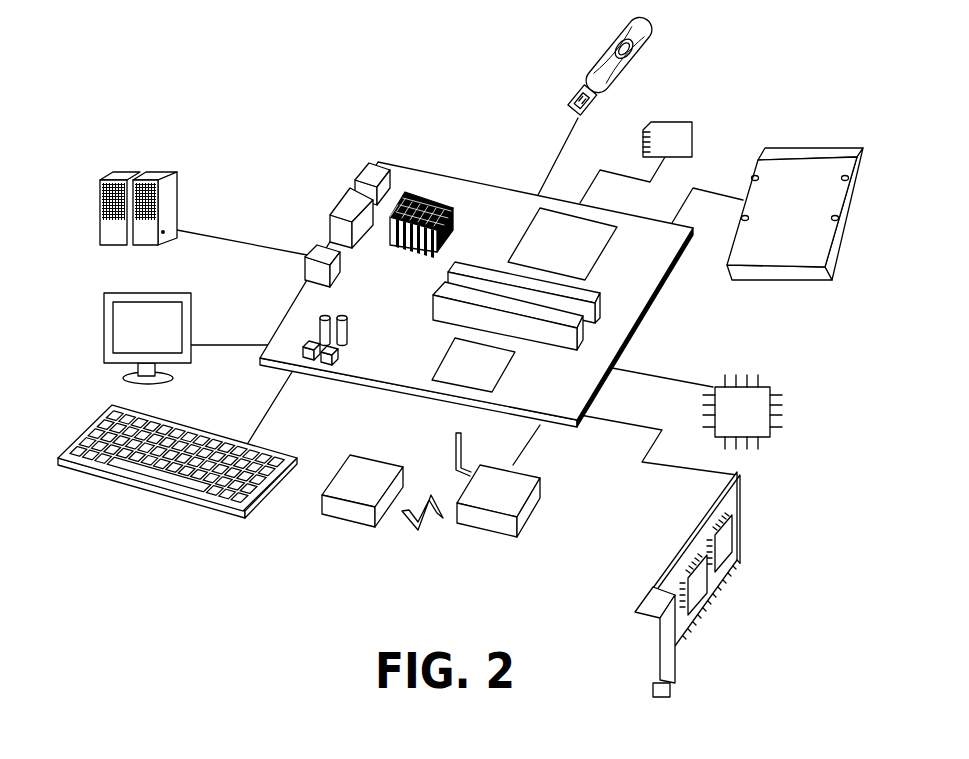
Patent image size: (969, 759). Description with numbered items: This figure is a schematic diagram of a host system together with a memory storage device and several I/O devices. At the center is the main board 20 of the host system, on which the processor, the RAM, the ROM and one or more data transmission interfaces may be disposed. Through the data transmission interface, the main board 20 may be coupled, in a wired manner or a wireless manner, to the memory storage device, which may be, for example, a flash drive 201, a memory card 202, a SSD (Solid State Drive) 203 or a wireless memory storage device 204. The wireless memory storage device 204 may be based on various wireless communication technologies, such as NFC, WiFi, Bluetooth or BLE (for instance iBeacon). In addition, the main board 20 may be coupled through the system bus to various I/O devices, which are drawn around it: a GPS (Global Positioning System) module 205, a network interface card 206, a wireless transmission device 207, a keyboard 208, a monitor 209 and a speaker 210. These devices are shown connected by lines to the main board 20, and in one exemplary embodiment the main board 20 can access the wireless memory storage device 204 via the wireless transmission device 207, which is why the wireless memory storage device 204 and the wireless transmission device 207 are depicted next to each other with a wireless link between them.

The main board 20 is at (477, 203).
The flash drive 201 is at (602, 57).
The memory card 202 is at (695, 128).
The SSD (Solid State Drive) 203 is at (813, 148).
The wireless memory storage device 204 is at (342, 470).
The GPS (Global Positioning System) module 205 is at (783, 410).
The network interface card 206 is at (738, 530).
The wireless transmission device 207 is at (540, 513).
The keyboard 208 is at (178, 498).
The monitor 209 is at (103, 347).
The speaker 210 is at (99, 234).